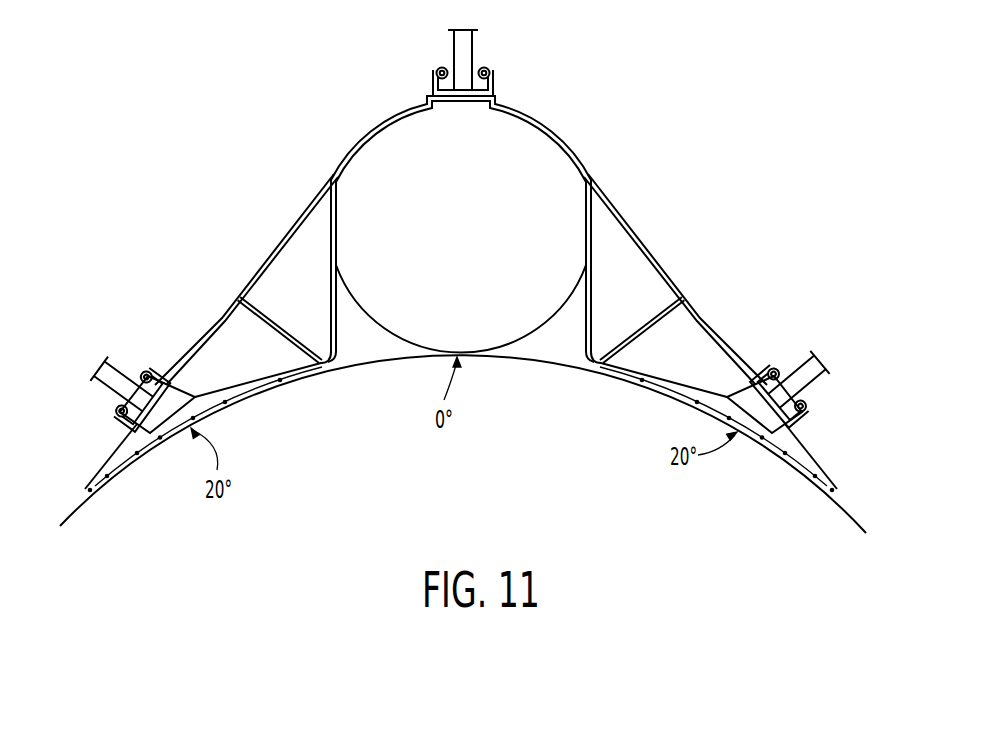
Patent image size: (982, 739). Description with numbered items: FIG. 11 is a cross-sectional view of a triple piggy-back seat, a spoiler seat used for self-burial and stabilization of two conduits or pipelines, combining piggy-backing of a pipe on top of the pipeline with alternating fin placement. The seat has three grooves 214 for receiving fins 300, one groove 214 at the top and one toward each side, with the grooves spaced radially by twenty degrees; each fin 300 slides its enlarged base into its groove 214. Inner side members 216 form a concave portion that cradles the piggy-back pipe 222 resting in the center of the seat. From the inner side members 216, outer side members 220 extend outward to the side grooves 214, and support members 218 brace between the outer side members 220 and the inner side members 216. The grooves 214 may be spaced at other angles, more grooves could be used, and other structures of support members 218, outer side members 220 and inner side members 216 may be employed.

The groove 214 is at (489, 78).
The inner side member 216 is at (331, 322).
The support member 218 is at (273, 318).
The outer side member 220 is at (266, 255).
The piggy-back pipe 222 is at (473, 334).
The fin 300 is at (466, 50).